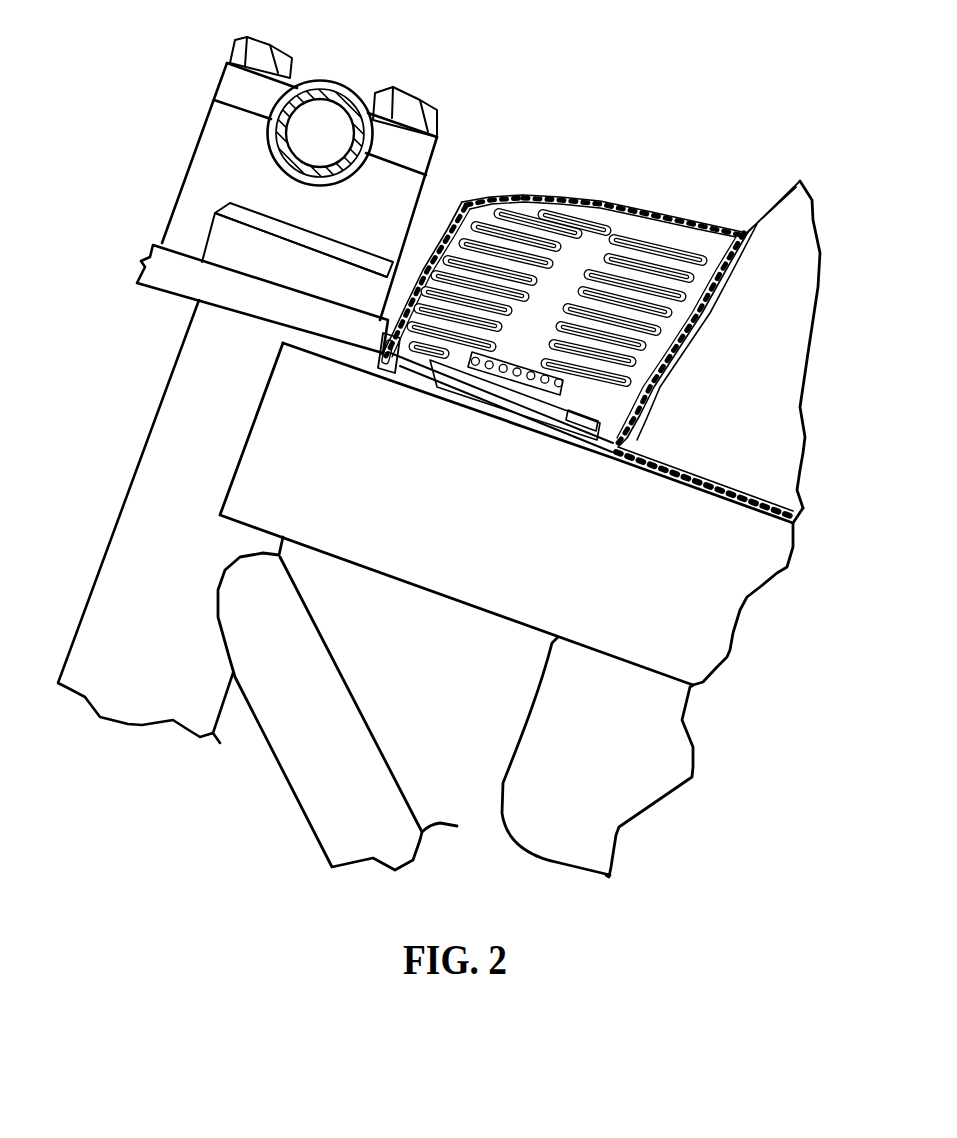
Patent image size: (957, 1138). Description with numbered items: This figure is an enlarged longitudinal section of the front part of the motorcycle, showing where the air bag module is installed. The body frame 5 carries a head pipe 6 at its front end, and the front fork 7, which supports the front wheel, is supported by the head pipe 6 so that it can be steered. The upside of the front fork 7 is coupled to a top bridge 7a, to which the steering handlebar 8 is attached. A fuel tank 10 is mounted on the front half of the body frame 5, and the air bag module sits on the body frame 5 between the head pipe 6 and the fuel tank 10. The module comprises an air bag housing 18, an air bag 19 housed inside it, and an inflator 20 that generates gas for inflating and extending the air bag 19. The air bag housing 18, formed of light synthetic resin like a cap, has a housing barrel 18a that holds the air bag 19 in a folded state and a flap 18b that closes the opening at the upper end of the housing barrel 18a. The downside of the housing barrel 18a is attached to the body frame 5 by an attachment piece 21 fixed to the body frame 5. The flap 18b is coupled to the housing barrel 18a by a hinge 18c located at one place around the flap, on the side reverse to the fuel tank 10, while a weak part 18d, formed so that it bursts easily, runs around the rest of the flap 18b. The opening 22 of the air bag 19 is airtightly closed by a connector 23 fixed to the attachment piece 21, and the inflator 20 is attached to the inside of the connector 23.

The body frame 5 is at (733, 592).
The head pipe 6 is at (176, 430).
The front fork 7 is at (132, 252).
The top bridge 7a is at (162, 280).
The steering handlebar 8 is at (331, 86).
The fuel tank 10 is at (797, 180).
The air bag housing 18 is at (642, 392).
The housing barrel 18a is at (425, 268).
The flap 18b is at (540, 195).
The hinge 18c is at (463, 200).
The weak part 18d is at (739, 237).
The air bag 19 is at (669, 240).
The inflator 20 is at (508, 378).
The attachment piece 21 is at (632, 455).
The opening 22 is at (574, 418).
The connector 23 is at (436, 367).